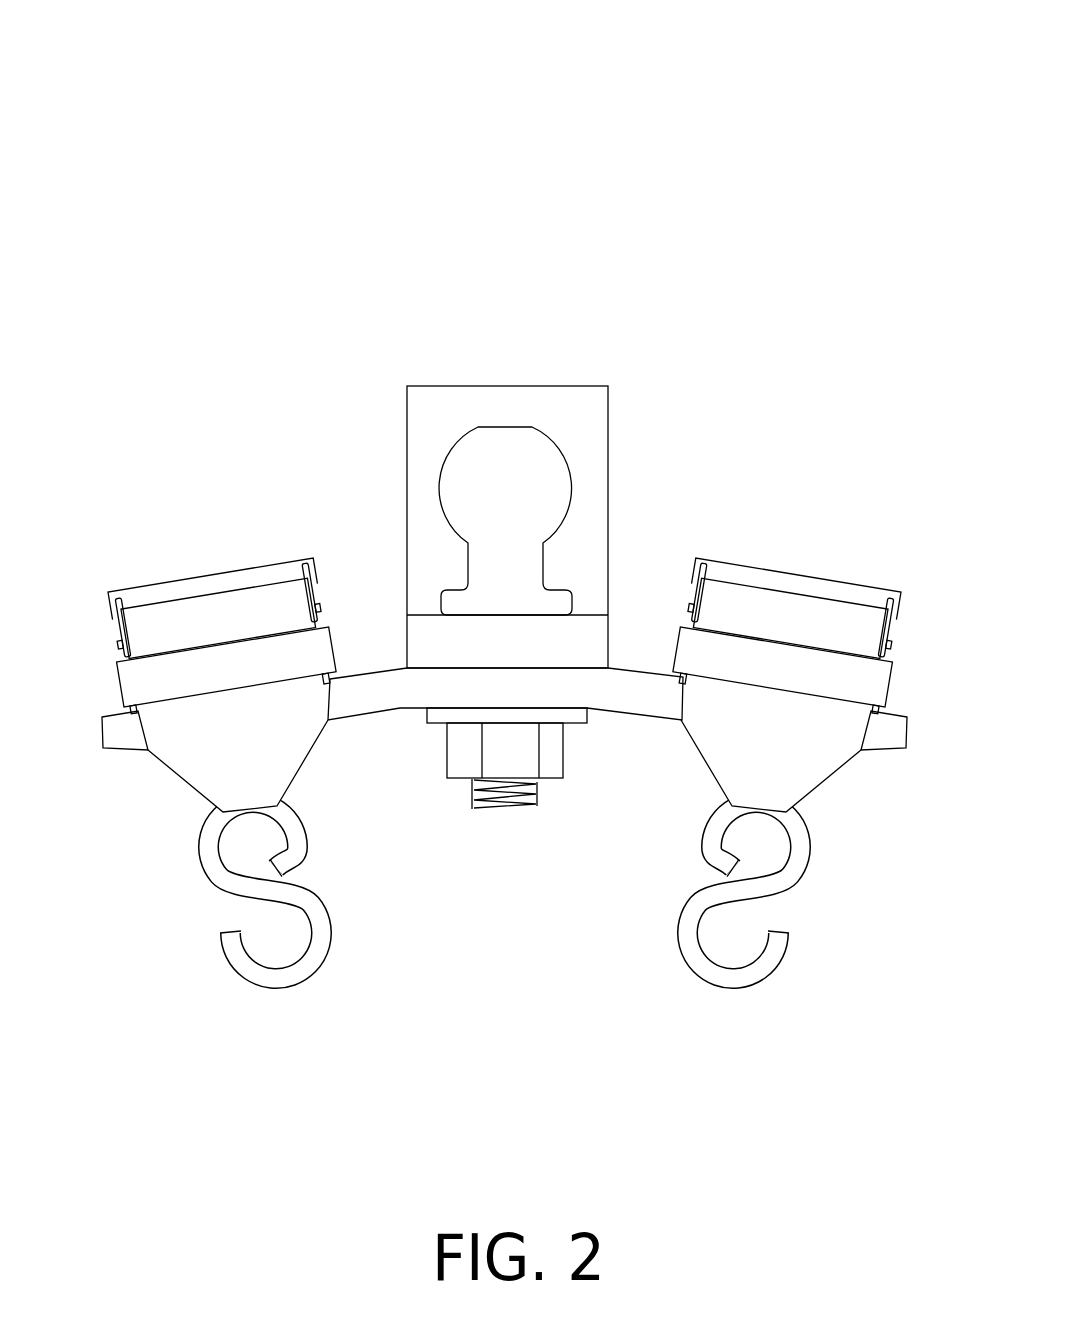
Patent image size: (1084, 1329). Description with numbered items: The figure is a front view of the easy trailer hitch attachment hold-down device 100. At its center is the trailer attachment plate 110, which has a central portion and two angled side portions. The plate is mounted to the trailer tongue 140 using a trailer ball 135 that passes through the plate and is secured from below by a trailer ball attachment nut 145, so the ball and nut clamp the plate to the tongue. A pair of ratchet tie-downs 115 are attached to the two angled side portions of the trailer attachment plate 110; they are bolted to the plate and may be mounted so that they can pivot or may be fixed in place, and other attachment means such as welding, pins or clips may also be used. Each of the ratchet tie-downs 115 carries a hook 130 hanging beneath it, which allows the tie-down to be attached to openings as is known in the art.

The easy trailer hitch attachment hold-down device 100 is at (232, 140).
The trailer attachment plate 110 is at (373, 683).
The ratchet tie-downs 115 is at (203, 612).
The hook 130 is at (257, 970).
The trailer ball 135 is at (520, 477).
The trailer tongue 140 is at (437, 405).
The trailer ball attachment nut 145 is at (512, 760).